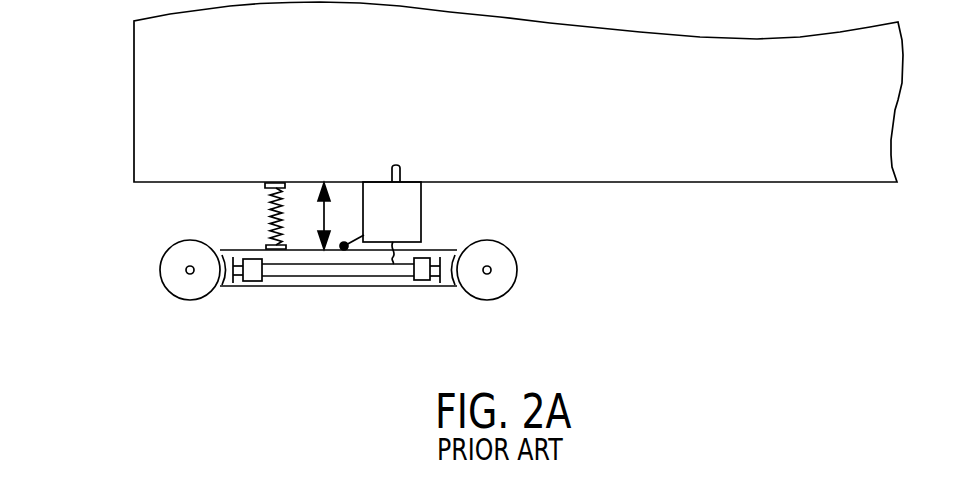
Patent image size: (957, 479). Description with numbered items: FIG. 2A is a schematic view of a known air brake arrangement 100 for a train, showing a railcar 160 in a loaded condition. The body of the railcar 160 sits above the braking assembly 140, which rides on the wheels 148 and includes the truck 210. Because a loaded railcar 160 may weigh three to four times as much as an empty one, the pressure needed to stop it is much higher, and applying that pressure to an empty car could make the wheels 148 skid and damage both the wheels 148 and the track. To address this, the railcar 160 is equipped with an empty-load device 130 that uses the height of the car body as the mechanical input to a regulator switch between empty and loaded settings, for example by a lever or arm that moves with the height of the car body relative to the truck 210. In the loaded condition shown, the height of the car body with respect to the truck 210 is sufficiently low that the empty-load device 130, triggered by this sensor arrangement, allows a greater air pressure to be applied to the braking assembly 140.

The railcar 160 is at (90, 66).
The prior art vehicle suspension system 100 is at (122, 208).
The empty-load device 130 is at (413, 202).
The wheels 148 is at (160, 268).
The braking assembly 140 is at (395, 305).
The truck 210 is at (427, 281).